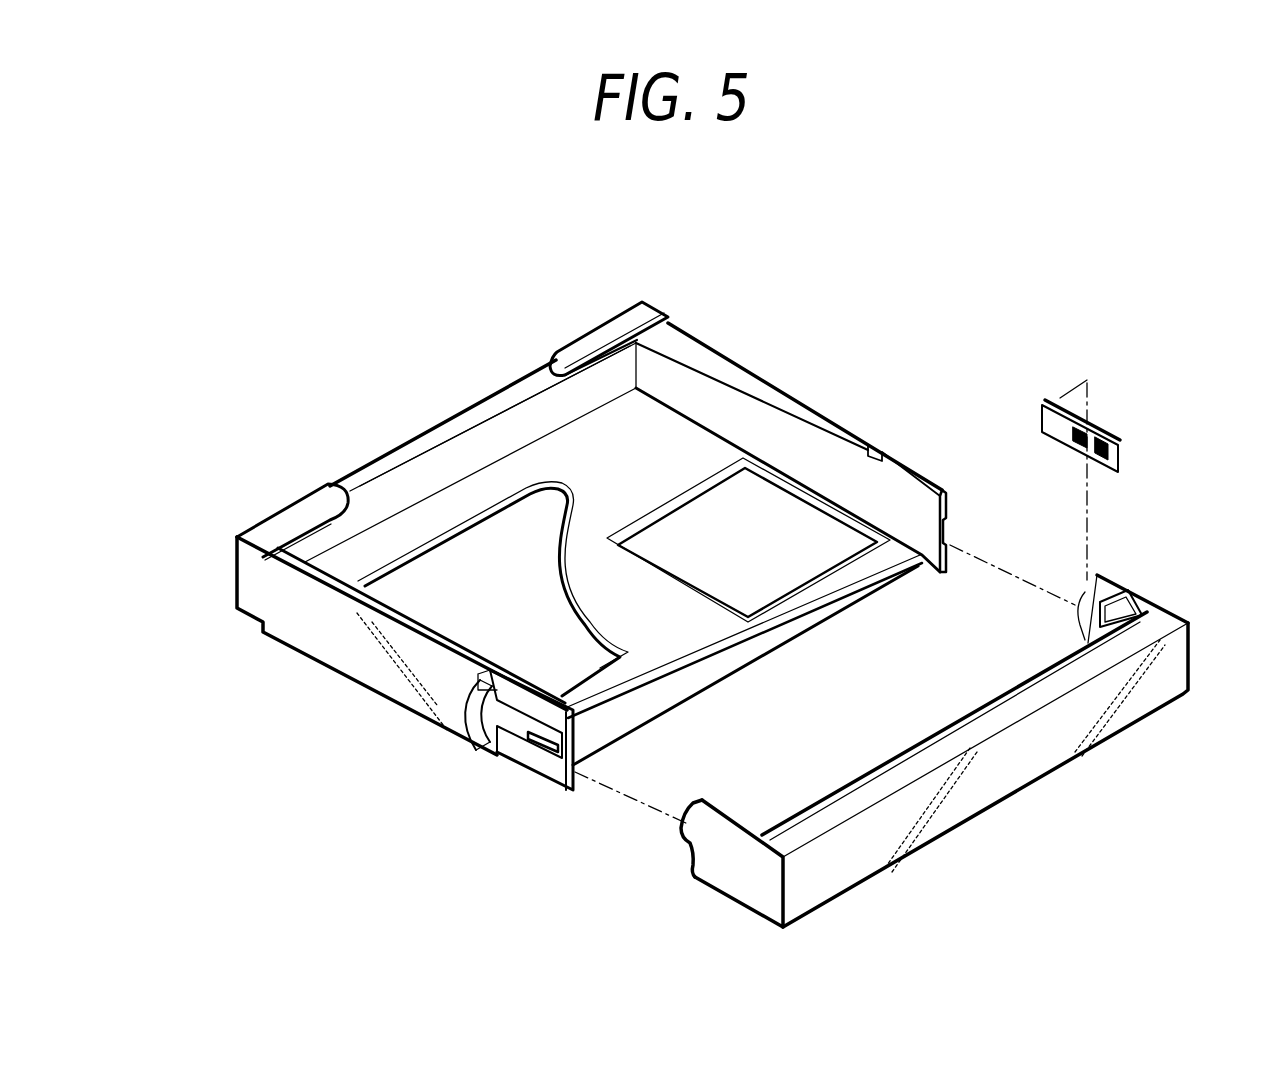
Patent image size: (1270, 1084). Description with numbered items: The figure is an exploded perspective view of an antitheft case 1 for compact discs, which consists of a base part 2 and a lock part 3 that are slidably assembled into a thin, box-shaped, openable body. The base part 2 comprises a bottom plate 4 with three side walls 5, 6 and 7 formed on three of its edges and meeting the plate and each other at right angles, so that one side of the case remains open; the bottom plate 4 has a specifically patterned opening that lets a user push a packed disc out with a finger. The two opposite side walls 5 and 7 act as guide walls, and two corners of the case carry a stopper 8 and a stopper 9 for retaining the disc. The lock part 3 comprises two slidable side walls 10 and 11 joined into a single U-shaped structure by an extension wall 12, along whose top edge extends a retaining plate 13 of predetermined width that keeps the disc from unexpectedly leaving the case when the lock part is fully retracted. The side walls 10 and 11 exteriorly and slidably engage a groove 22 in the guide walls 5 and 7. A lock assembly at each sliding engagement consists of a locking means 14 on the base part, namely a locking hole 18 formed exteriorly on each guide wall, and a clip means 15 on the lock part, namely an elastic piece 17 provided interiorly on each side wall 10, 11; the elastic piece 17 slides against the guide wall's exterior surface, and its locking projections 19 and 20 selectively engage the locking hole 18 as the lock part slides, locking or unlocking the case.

The antitheft case 1 is at (744, 356).
The base part 2 is at (486, 393).
The lock part 3 is at (988, 820).
The bottom plate 4 is at (663, 678).
The side wall 5 is at (822, 413).
The side wall 6 is at (420, 470).
The side wall 7 is at (372, 683).
The stopper 8 is at (583, 347).
The stopper 9 is at (307, 507).
The slidable side wall 10 is at (1130, 597).
The slidable side wall 11 is at (727, 875).
The extension wall 12 is at (1072, 740).
The retaining plate 13 is at (975, 720).
The locking means 14 is at (533, 783).
The clip means 15 is at (1118, 424).
The elastic piece 17 is at (1050, 420).
The locking hole 18 is at (527, 740).
The locking projection 19 is at (1076, 442).
The locking projection 20 is at (1098, 455).
The groove 22 is at (470, 700).